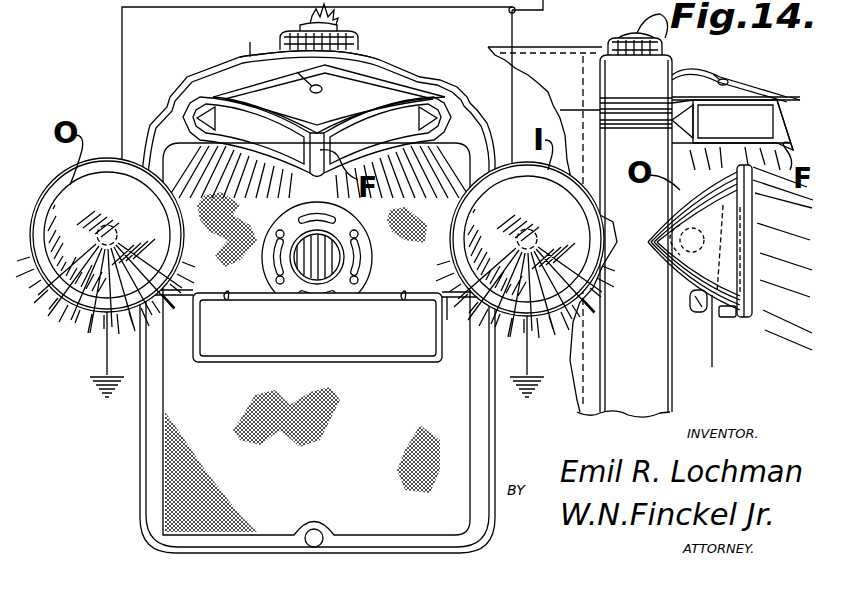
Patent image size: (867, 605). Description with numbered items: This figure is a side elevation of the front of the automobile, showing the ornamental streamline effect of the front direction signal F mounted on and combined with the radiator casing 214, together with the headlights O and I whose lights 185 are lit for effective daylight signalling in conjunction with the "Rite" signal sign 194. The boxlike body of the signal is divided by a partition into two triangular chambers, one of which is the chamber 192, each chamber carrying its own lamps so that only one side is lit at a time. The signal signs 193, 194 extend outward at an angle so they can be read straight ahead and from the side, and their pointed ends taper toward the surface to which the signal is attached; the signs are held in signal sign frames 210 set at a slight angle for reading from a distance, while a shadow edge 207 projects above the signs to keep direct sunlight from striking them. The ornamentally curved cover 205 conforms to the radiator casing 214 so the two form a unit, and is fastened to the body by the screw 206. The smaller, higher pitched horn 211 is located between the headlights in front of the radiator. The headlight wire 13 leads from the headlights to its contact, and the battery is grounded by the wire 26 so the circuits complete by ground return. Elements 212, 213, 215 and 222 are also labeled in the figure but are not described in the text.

The headlight wire 13 is at (122, 80).
The ground wire 26 is at (107, 358).
The light 185 is at (110, 227).
The triangular chamber 192 is at (170, 397).
The signal sign 193 is at (393, 133).
The signal sign 194 is at (258, 135).
The cover 205 is at (350, 82).
The screw 206 is at (297, 72).
The shadow edge 207 is at (795, 97).
The signal sign frame 210 is at (788, 122).
The horn 211 is at (365, 258).
The bracket 212 is at (452, 322).
The license plate 213 is at (355, 362).
The radiator casing 214 is at (250, 42).
The lamp 215 is at (75, 195).
The finial 222 is at (338, 28).